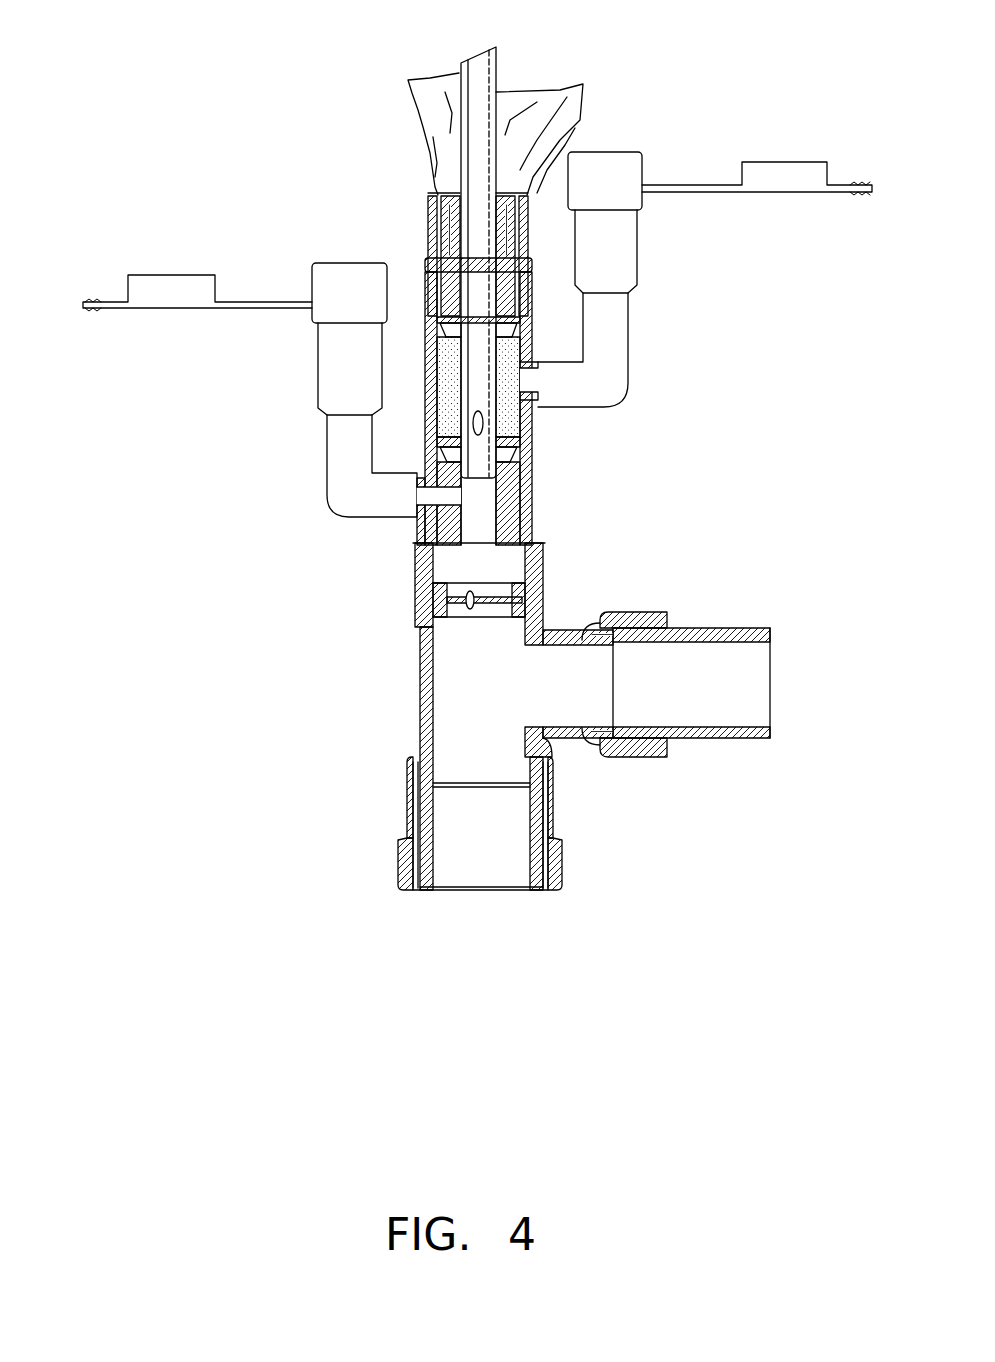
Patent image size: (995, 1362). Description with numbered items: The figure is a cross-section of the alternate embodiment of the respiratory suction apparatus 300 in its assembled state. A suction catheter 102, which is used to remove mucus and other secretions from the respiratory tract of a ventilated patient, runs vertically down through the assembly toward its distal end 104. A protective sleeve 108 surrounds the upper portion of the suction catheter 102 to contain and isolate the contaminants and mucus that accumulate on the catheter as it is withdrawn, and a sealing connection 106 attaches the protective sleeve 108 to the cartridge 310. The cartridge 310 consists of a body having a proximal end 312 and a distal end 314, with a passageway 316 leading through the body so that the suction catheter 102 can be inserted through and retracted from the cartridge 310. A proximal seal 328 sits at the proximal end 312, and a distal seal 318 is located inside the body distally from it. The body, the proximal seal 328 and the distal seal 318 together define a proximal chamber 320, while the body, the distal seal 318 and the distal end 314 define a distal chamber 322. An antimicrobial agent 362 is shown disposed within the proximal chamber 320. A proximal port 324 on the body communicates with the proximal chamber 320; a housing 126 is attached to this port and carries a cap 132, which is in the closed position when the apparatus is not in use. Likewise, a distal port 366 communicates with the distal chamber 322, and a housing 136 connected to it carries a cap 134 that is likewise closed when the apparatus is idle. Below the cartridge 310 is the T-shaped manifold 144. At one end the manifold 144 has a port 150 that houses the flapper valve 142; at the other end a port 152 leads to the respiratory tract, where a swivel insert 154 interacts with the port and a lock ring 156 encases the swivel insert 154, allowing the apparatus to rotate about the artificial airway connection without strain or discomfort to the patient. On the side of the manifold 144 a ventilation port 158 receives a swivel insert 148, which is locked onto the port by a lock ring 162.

The suction catheter 102 is at (461, 62).
The distal end 104 is at (475, 487).
The sealing connection 106 is at (575, 129).
The protective sleeve 108 is at (567, 87).
The housing 126 is at (627, 248).
The cap 132 is at (780, 160).
The cap 134 is at (157, 300).
The housing 136 is at (333, 373).
The flapper valve 142 is at (417, 599).
The T-shaped manifold 144 is at (420, 682).
The swivel insert 148 is at (720, 630).
The port 150 is at (415, 627).
The port 152 is at (410, 770).
The swivel insert 154 is at (397, 830).
The lock ring 156 is at (403, 897).
The ventilation port 158 is at (558, 727).
The lock ring 162 is at (670, 745).
The respiratory suction apparatus 300 is at (210, 145).
The cartridge 310 is at (697, 452).
The proximal end 312 is at (530, 277).
The distal end 314 is at (517, 475).
The passageway 316 is at (515, 345).
The distal seal 318 is at (437, 442).
The proximal chamber 320 is at (513, 413).
The distal chamber 322 is at (475, 510).
The proximal port 324 is at (535, 400).
The proximal seal 328 is at (525, 322).
The antimicrobial agent 362 is at (453, 378).
The distal port 366 is at (423, 513).